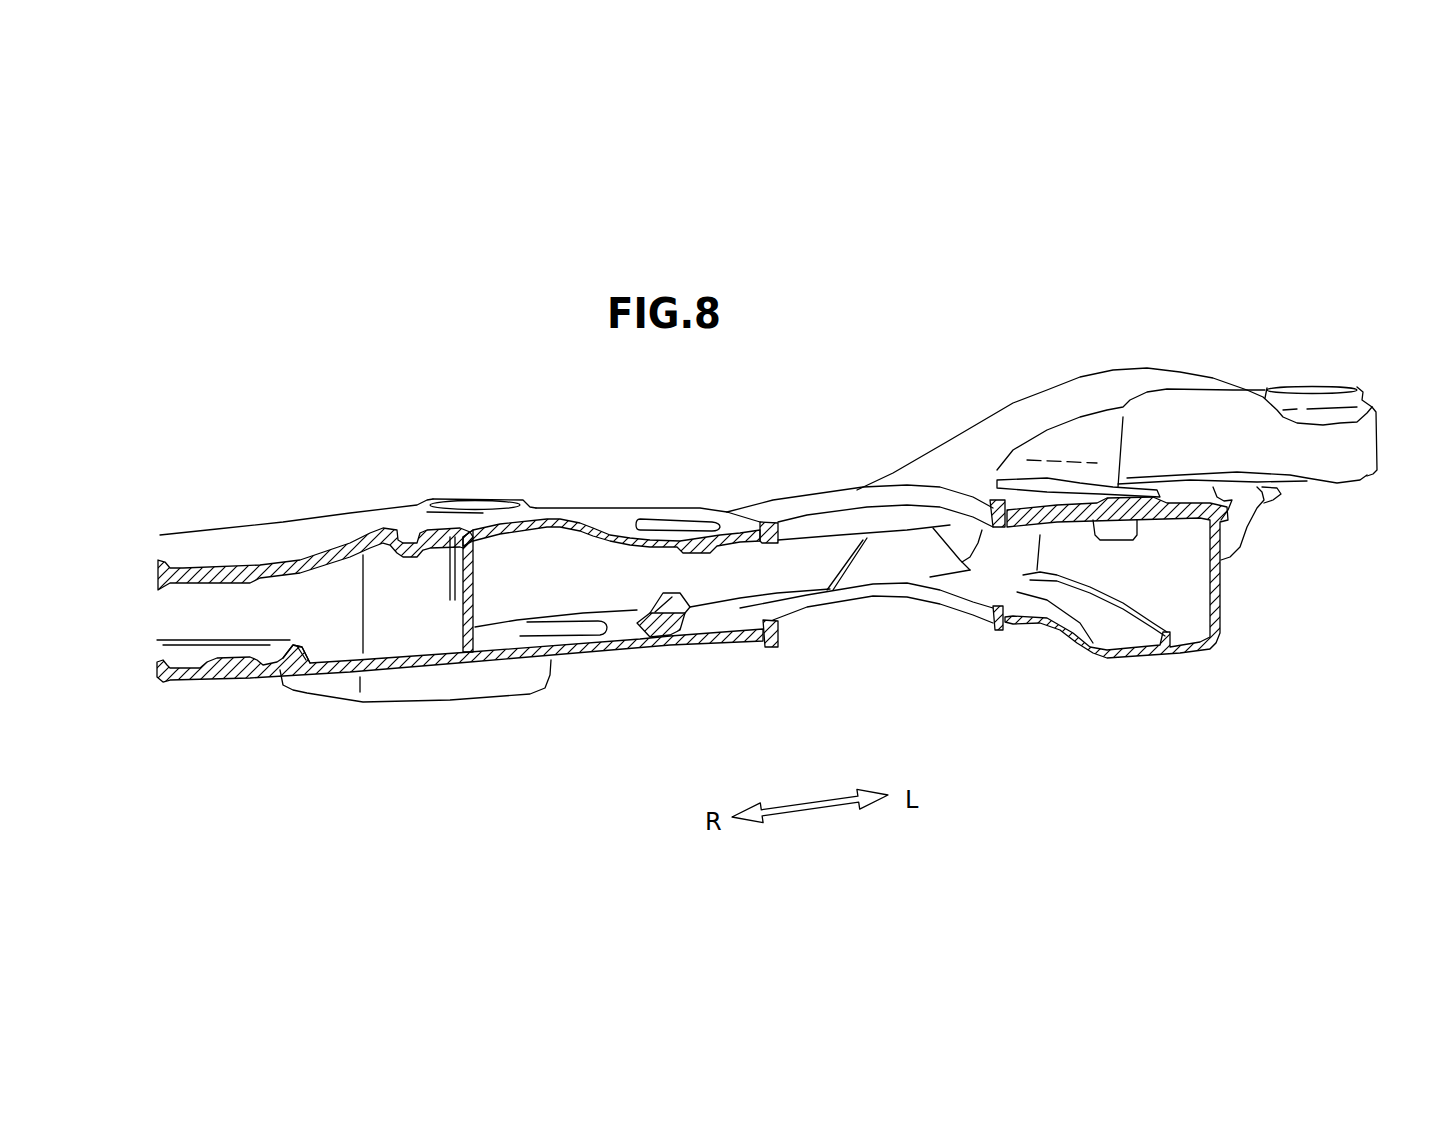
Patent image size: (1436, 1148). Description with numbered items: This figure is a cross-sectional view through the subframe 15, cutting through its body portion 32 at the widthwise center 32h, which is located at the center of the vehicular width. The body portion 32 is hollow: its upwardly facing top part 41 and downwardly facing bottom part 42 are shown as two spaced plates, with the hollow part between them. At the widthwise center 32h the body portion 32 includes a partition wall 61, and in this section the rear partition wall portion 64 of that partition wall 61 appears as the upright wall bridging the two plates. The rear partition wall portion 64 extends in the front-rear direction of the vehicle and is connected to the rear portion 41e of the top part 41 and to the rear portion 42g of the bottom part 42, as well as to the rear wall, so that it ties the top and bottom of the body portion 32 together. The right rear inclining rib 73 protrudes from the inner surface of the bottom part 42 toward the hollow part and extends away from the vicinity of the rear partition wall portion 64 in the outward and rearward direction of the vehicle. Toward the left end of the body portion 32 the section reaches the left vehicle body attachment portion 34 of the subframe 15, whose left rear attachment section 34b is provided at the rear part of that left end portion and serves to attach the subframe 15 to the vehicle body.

The subframe 15 is at (1114, 339).
The body portion 32 is at (977, 482).
The widthwise center 32h is at (466, 469).
The left vehicle body attachment portion 34 is at (1319, 336).
The left rear attachment section 34b is at (1320, 443).
The top part 41 is at (468, 516).
The rear portion of the top part 41e is at (481, 473).
The bottom part 42 is at (493, 667).
The rear portion of the bottom part 42g is at (517, 692).
The partition wall 61 is at (418, 553).
The rear partition wall portion 64 is at (478, 608).
The right rear inclining rib 73 is at (461, 675).